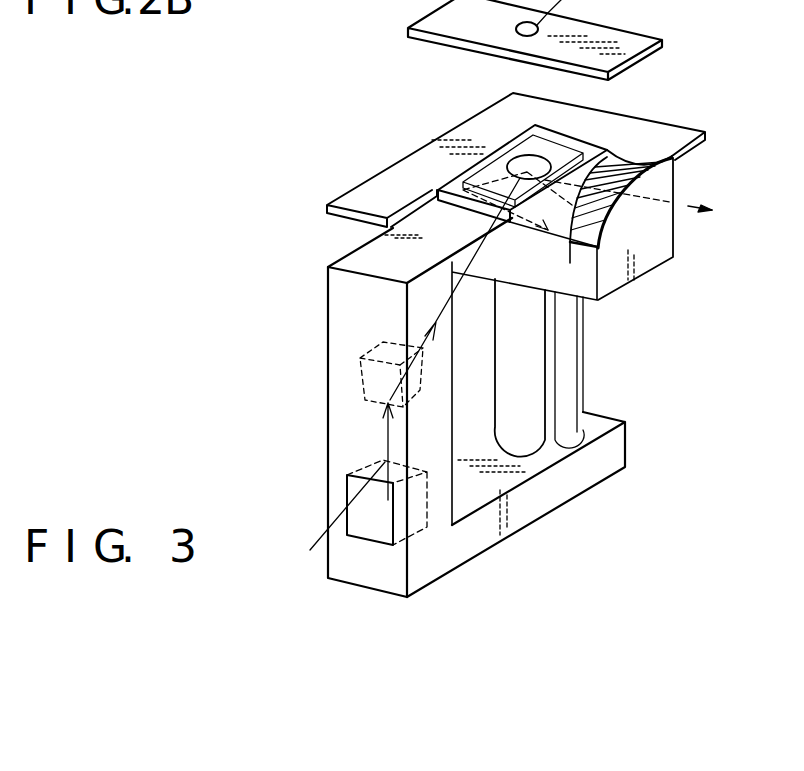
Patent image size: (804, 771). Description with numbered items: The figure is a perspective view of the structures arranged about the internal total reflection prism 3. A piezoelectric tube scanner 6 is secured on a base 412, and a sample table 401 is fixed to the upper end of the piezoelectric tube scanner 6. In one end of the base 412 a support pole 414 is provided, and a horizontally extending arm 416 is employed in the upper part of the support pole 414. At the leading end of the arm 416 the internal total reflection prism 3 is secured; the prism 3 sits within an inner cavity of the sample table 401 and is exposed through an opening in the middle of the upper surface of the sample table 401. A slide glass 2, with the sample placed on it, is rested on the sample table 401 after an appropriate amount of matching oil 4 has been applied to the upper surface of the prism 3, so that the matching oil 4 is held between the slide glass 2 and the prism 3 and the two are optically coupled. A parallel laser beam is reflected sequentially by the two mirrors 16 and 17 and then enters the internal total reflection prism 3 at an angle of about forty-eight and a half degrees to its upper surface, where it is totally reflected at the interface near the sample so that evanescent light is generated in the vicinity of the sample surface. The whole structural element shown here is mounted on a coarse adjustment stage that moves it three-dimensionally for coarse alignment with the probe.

The slide glass 2 is at (664, 48).
The internal total reflection prism 3 is at (575, 147).
The matching oil 4 is at (517, 150).
The sample table 401 is at (668, 137).
The horizontally extending arm 416 is at (360, 261).
The support pole 414 is at (345, 437).
The base 412 is at (607, 467).
The piezoelectric tube scanner 6 is at (580, 362).
The mirror 16 is at (420, 527).
The mirror 17 is at (360, 364).